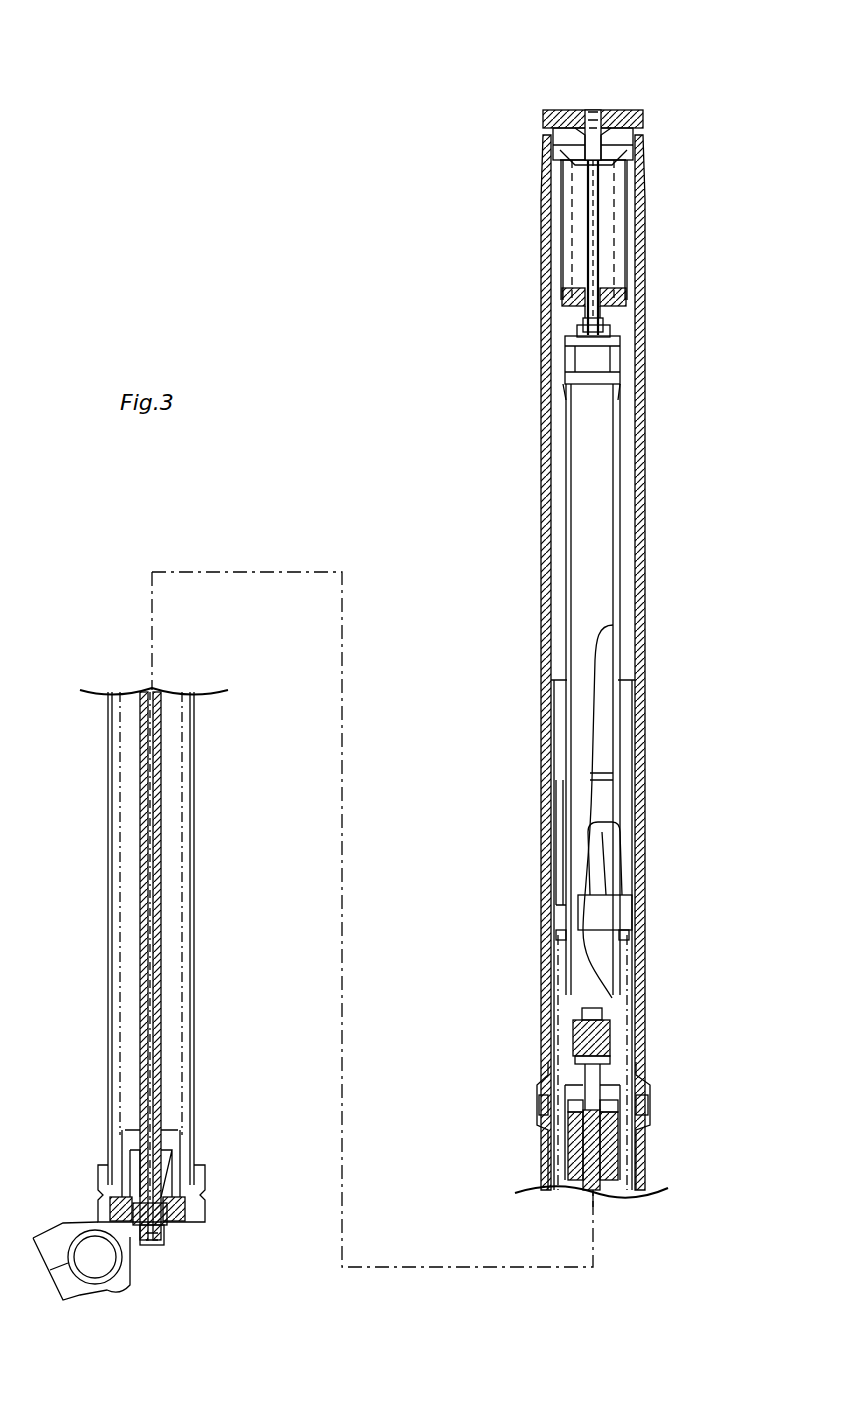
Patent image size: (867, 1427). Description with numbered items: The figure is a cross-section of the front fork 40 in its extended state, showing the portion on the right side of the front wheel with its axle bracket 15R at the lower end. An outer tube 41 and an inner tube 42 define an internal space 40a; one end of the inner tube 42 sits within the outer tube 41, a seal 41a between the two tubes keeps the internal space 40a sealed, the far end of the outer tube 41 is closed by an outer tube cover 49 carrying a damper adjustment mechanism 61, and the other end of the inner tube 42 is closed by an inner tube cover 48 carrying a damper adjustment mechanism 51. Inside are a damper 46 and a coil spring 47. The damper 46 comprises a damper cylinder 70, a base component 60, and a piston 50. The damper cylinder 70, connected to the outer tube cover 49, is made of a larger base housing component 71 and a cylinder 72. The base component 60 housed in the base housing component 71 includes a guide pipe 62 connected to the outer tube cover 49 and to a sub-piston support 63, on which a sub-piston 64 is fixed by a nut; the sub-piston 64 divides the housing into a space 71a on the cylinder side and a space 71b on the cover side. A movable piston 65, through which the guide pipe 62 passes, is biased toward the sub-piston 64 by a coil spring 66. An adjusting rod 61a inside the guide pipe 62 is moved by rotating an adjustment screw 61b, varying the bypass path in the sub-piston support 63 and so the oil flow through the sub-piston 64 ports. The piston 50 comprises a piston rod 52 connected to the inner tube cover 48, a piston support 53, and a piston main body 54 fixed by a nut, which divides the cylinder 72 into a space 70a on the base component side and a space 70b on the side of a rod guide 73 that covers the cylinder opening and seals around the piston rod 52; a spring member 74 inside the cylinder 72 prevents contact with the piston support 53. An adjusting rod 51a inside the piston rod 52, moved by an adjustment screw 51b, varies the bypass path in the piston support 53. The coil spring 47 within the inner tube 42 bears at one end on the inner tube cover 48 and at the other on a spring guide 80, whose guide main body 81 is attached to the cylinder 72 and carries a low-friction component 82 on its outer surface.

The front fork 40 is at (488, 180).
The outer tube 41 is at (643, 486).
The outer tube cover 49 is at (614, 122).
The damper adjustment mechanism 61 is at (596, 105).
The adjustment screw 61b is at (587, 118).
The adjusting rod 61a is at (590, 238).
The coil spring 66 is at (620, 167).
The base housing component 71 is at (627, 287).
The guide pipe 62 is at (600, 232).
The movable piston 65 is at (568, 292).
The sub-piston support 63 is at (603, 324).
The space 71b is at (583, 328).
The sub-piston 64 is at (606, 356).
The space 71a is at (612, 372).
The base component 60 is at (533, 378).
The internal space 40a is at (556, 516).
The damper cylinder 70 is at (628, 530).
The cylinder 72 is at (618, 578).
The coil spring 47 is at (628, 938).
The spring guide 80 is at (615, 797).
The guide main body 81 is at (626, 829).
The low-friction component 82 is at (610, 912).
The space 70a is at (583, 972).
The piston 50 is at (592, 995).
The damper 46 is at (658, 1008).
The piston main body 54 is at (577, 1038).
The space 70b is at (578, 1072).
The piston support 53 is at (606, 1076).
The spring member 74 is at (572, 1102).
The rod guide 73 is at (572, 1135).
The seal 41a is at (658, 1106).
The inner tube 42 is at (192, 862).
The piston rod 52 is at (158, 796).
The adjusting rod 51a is at (154, 970).
The inner tube cover 48 is at (197, 1228).
The adjustment screw 51b is at (158, 1250).
The damper adjustment mechanism 51 is at (155, 1250).
The axle bracket 15R is at (108, 1292).